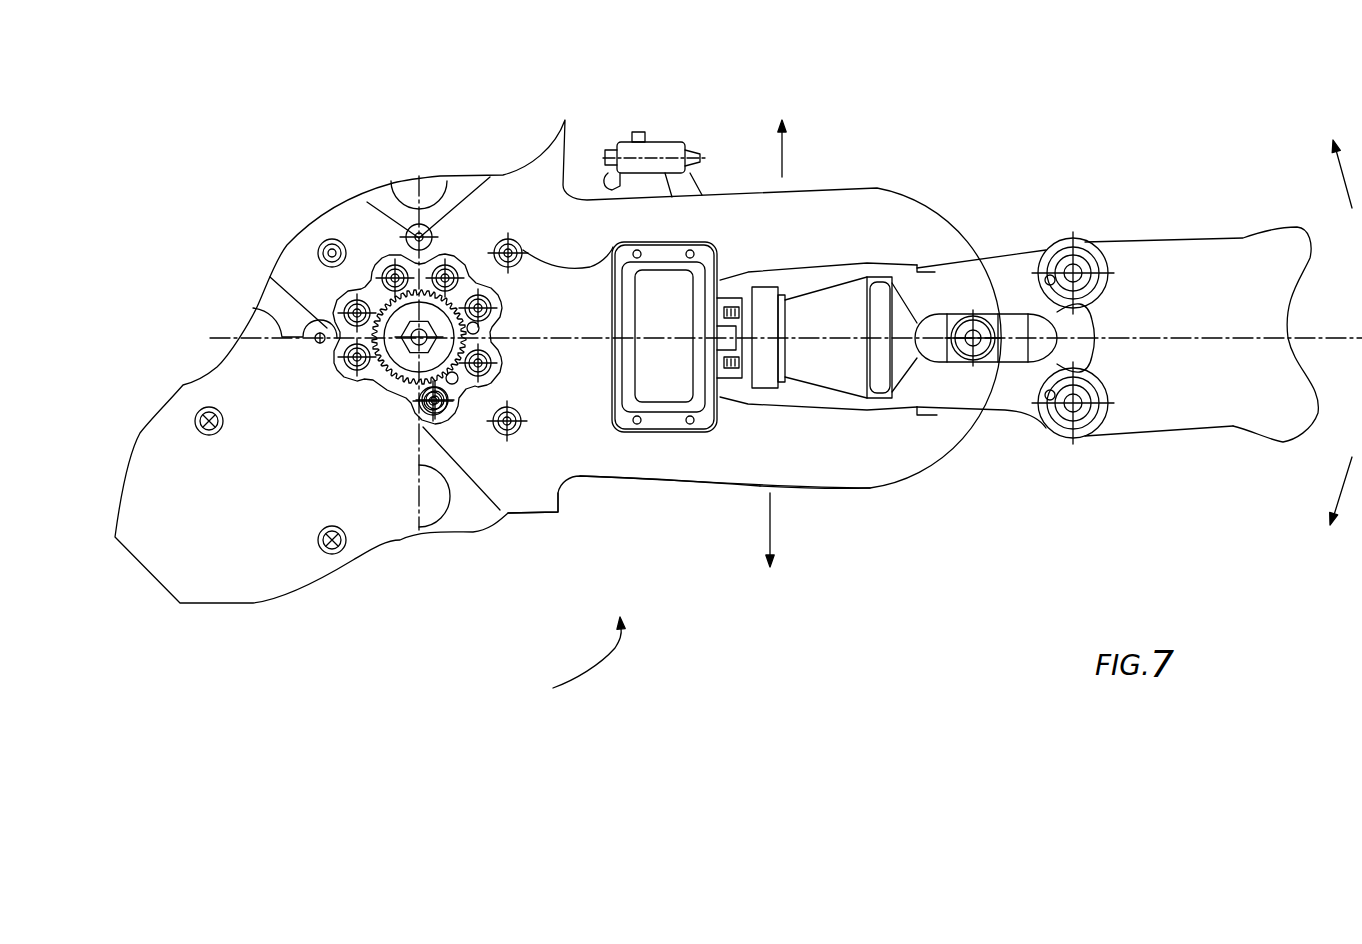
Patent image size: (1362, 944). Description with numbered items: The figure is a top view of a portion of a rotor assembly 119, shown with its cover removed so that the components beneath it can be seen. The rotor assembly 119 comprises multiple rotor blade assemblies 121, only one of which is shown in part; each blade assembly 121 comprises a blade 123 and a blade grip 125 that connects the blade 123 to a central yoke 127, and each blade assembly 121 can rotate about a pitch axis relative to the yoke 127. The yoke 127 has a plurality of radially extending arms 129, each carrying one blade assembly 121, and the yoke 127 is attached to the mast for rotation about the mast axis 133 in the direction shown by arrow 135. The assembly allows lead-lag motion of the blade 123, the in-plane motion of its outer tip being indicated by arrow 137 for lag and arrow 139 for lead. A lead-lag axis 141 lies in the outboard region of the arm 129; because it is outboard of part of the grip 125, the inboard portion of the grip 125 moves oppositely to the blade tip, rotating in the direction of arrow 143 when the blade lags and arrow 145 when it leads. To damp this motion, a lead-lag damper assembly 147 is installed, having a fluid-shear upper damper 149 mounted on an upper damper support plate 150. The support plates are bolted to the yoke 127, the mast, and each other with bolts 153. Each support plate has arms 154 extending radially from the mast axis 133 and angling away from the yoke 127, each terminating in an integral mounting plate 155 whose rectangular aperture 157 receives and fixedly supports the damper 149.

The rotor assembly 119 is at (853, 123).
The rotor blade assembly 121 is at (1134, 228).
The blade 123 is at (1188, 410).
The blade grip 125 is at (1027, 405).
The central yoke 127 is at (648, 492).
The arm 129 is at (868, 472).
The mast axis 133 is at (416, 346).
The arrow 135 is at (615, 648).
The arrow 137 is at (1337, 487).
The arrow 139 is at (1343, 190).
The lead-lag axis 141 is at (937, 337).
The arrow 143 is at (782, 157).
The arrow 145 is at (770, 525).
The lead-lag damper assembly 147 is at (662, 273).
The upper damper 149 is at (620, 405).
The upper damper support plate 150 is at (505, 472).
The bolt 153 is at (507, 240).
The arm 154 is at (580, 290).
The mounting plate 155 is at (713, 422).
The rectangular aperture 157 is at (703, 268).